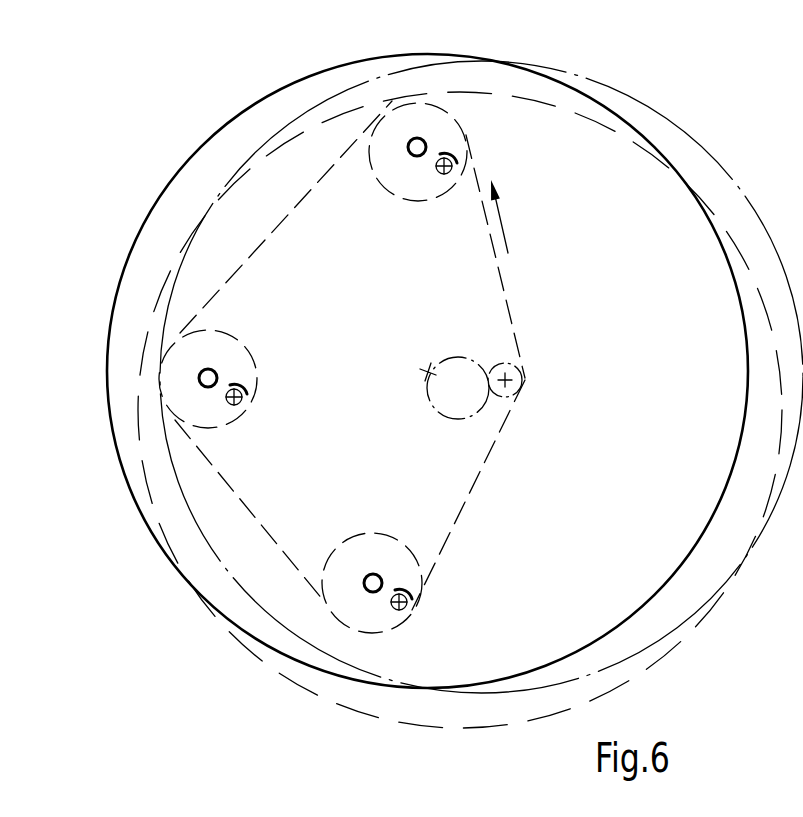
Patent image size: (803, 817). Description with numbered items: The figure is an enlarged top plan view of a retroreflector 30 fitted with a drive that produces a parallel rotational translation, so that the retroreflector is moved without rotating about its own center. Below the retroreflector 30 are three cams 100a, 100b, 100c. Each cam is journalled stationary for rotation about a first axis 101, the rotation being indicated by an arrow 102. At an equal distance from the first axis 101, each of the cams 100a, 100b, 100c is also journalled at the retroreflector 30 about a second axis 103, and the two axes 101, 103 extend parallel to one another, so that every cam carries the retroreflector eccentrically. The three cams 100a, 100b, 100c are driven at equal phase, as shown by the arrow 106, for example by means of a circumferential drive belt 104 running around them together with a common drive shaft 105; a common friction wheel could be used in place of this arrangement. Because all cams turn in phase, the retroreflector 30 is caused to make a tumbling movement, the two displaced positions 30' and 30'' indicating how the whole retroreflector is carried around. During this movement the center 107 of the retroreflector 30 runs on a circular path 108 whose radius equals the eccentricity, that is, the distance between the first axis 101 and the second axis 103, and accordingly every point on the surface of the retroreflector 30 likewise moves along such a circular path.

The retroreflector 30 is at (390, 371).
The retroreflector position 30' is at (460, 442).
The retroreflector position 30'' is at (481, 362).
The cam 100a is at (244, 352).
The cam 100b is at (390, 190).
The cam 100c is at (352, 557).
The first axis 101 is at (238, 406).
The arrow 102 is at (250, 388).
The second axis 103 is at (208, 370).
The circumferential drive belt 104 is at (453, 537).
The common drive shaft 105 is at (503, 393).
The arrow 106 is at (514, 216).
The center 107 is at (426, 373).
The circular path 108 is at (453, 355).